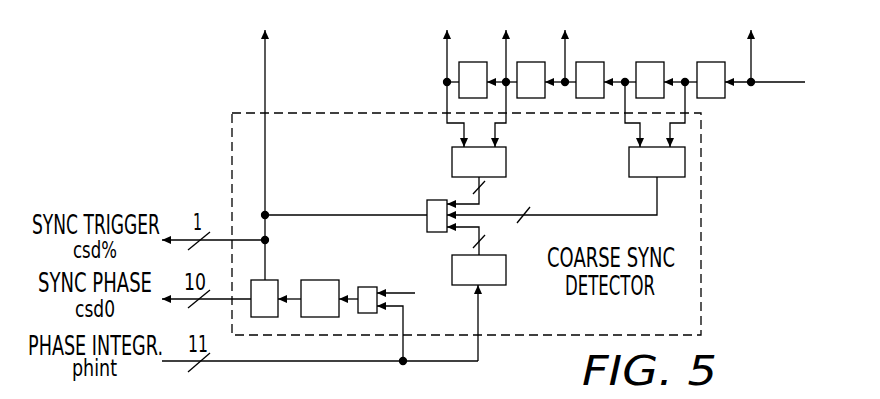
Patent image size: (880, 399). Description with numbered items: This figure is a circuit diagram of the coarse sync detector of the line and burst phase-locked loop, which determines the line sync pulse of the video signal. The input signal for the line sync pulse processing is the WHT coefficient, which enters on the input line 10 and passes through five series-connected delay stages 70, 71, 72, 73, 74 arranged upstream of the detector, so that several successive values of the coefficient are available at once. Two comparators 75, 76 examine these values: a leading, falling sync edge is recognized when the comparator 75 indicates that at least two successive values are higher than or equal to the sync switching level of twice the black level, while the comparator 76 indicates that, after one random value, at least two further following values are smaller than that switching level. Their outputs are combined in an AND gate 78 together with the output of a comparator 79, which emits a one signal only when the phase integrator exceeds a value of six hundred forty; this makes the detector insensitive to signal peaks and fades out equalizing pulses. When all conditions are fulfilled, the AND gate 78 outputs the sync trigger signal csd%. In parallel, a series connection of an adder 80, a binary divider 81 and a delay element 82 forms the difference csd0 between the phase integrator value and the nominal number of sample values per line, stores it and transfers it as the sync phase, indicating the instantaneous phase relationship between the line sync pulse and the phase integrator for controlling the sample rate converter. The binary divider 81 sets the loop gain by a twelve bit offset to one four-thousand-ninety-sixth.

The input signal WHT0,0 10 is at (790, 76).
The delay stage 70 is at (708, 62).
The delay stage 71 is at (650, 62).
The delay stage 72 is at (588, 62).
The delay stage 73 is at (528, 62).
The delay stage 74 is at (472, 62).
The comparator 75 is at (452, 161).
The comparator 76 is at (629, 161).
The AND gate 78 is at (430, 200).
The comparator 79 is at (493, 285).
The adder 80 is at (367, 287).
The binary divider 81 is at (315, 280).
The delay element 82 is at (268, 280).